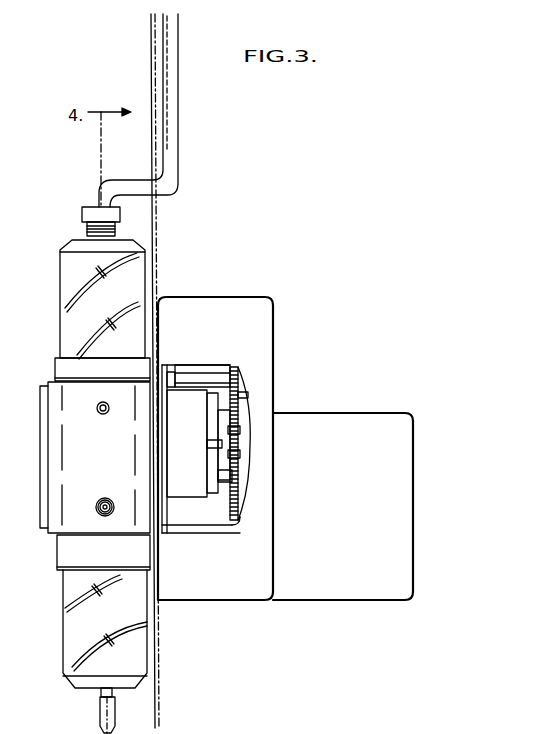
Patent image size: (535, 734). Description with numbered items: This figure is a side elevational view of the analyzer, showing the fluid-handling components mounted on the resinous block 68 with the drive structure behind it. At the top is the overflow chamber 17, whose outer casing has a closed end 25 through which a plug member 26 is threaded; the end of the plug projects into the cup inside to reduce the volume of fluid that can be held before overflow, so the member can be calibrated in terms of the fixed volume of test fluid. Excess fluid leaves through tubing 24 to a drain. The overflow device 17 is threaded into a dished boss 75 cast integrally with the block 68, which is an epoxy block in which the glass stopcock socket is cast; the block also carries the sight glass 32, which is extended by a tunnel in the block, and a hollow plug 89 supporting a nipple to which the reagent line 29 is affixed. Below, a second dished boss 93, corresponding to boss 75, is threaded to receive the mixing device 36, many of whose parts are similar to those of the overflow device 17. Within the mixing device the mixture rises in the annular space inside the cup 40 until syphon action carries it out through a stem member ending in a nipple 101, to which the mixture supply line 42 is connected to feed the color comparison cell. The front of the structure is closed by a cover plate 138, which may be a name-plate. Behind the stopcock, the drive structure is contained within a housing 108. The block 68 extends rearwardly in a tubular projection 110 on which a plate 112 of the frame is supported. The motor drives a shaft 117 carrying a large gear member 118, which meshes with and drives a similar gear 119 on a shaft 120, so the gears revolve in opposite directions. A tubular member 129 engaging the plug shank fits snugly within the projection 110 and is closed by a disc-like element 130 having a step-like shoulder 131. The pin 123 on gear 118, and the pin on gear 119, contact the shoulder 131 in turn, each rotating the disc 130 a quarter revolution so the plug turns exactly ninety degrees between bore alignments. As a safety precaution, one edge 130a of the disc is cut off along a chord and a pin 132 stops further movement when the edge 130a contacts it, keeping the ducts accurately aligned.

The overflow chamber 17 is at (83, 299).
The tubing 24 is at (98, 406).
The closed end 25 is at (62, 288).
The plug member 26 is at (82, 212).
The reagent line 29 is at (97, 511).
The sight glass 32 is at (178, 150).
The mixing device 36 is at (83, 629).
The cup 40 is at (68, 607).
The mixture supply line 42 is at (101, 718).
The resinous block 68 is at (75, 457).
The dished boss 75 is at (65, 368).
The hollow plug 89 is at (106, 498).
The dished boss 93 is at (70, 546).
The nipple 101 is at (100, 692).
The housing 108 is at (276, 346).
The tubular projection 110 is at (242, 433).
The plate 112 is at (172, 392).
The shaft 117 is at (224, 504).
The gear member 118 is at (239, 510).
The gear 119 is at (240, 390).
The shaft 120 is at (210, 380).
The pin 123 is at (218, 476).
The tubular member 129 is at (212, 408).
The disc-like element 130 is at (236, 430).
The edge 130a is at (241, 396).
The shoulder 131 is at (237, 455).
The pin 132 is at (208, 442).
The cover plate 138 is at (44, 398).